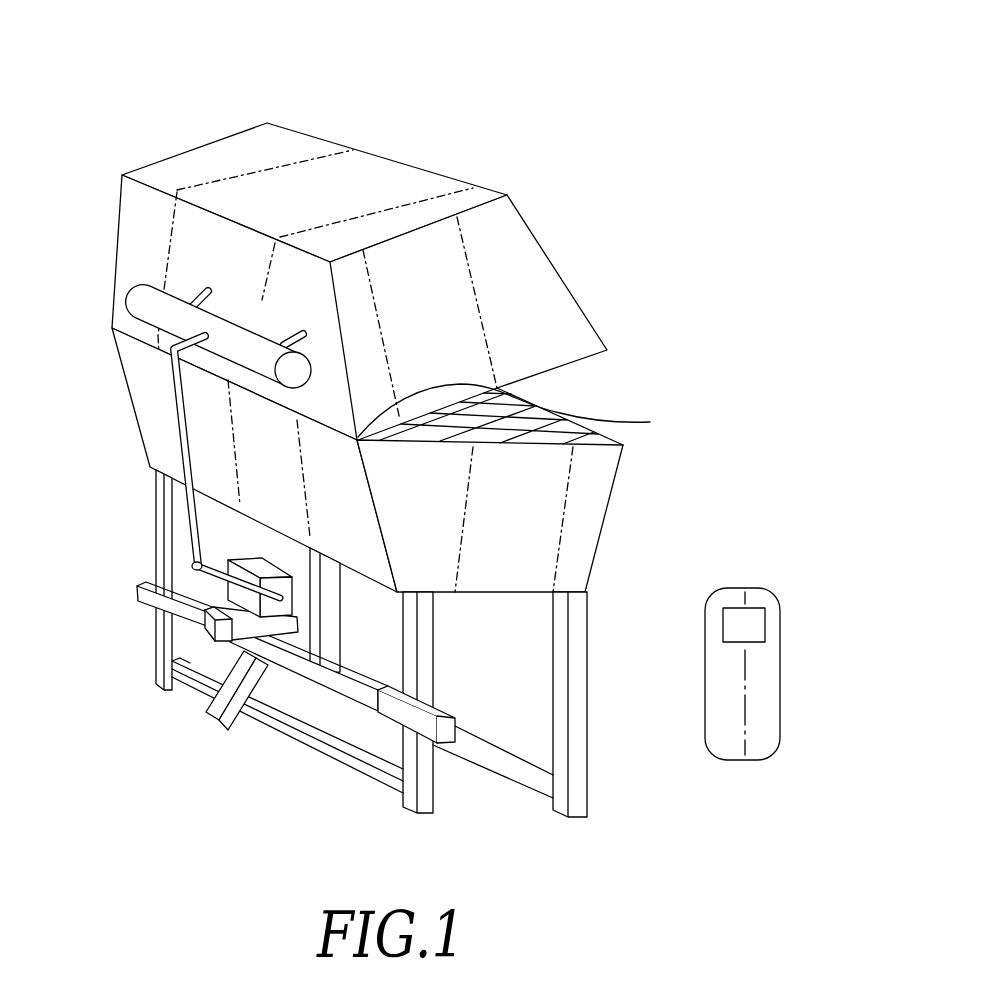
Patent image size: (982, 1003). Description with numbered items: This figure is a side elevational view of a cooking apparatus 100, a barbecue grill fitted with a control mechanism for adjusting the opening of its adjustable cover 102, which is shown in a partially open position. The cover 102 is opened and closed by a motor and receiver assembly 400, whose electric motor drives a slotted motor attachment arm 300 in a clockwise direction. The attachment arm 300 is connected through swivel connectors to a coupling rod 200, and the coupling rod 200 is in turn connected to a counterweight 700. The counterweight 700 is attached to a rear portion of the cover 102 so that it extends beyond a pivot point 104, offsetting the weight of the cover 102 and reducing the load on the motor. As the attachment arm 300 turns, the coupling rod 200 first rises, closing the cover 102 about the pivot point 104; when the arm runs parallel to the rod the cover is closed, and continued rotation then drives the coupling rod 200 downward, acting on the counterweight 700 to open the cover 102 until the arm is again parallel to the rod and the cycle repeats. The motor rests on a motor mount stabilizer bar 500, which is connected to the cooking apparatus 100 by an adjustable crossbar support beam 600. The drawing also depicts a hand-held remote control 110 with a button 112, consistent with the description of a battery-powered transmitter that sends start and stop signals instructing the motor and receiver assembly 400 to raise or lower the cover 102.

The cooking apparatus 100 is at (484, 109).
The adjustable cover 102 is at (518, 204).
The pivot point 104 is at (641, 422).
The remote control 110 is at (781, 677).
The remote control button 112 is at (722, 626).
The coupling rod 200 is at (180, 423).
The slotted motor attachment arm 300 is at (137, 578).
The motor and receiver assembly 400 is at (298, 591).
The motor mount stabilizer bar 500 is at (215, 713).
The adjustable crossbar support beam 600 is at (305, 670).
The counterweight 700 is at (233, 320).